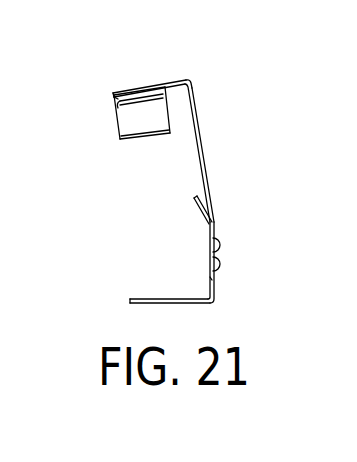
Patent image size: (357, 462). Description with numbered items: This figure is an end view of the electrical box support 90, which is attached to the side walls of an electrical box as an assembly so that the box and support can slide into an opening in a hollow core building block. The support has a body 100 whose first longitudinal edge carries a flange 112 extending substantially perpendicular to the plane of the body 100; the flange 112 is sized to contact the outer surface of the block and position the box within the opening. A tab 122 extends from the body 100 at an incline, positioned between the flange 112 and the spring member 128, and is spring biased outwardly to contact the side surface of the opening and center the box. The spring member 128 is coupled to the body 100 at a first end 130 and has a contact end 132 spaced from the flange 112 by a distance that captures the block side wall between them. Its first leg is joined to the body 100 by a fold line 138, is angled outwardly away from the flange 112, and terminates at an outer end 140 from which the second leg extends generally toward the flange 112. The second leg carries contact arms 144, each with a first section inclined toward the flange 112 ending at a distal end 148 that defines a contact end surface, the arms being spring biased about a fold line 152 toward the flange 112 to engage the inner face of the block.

The electrical box support 90 is at (115, 70).
The body 100 is at (215, 288).
The flange 112 is at (167, 304).
The tab 122 is at (195, 210).
The spring member 128 is at (191, 82).
The first end 130 is at (214, 220).
The contact end 132 is at (123, 135).
The fold line 138 is at (217, 224).
The outer end 140 is at (195, 93).
The contact arm 144 is at (114, 105).
The distal end 148 is at (150, 139).
The fold line 152 is at (131, 91).